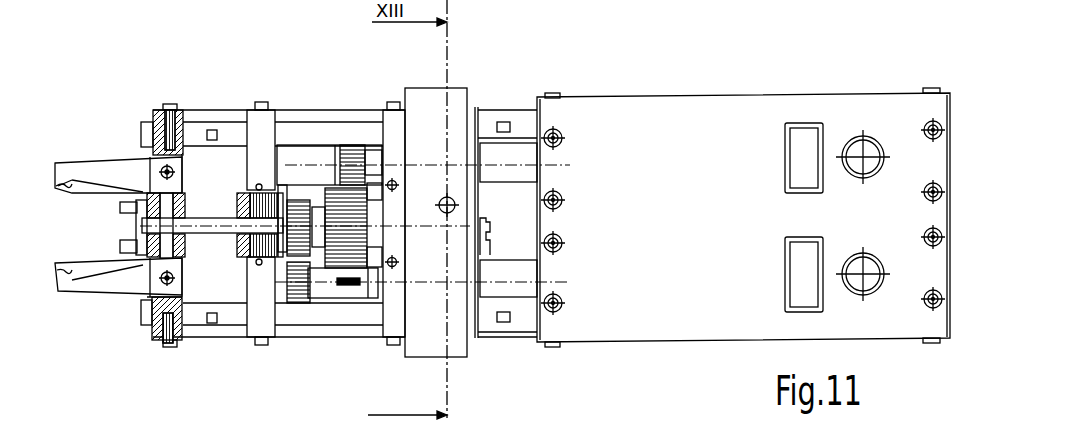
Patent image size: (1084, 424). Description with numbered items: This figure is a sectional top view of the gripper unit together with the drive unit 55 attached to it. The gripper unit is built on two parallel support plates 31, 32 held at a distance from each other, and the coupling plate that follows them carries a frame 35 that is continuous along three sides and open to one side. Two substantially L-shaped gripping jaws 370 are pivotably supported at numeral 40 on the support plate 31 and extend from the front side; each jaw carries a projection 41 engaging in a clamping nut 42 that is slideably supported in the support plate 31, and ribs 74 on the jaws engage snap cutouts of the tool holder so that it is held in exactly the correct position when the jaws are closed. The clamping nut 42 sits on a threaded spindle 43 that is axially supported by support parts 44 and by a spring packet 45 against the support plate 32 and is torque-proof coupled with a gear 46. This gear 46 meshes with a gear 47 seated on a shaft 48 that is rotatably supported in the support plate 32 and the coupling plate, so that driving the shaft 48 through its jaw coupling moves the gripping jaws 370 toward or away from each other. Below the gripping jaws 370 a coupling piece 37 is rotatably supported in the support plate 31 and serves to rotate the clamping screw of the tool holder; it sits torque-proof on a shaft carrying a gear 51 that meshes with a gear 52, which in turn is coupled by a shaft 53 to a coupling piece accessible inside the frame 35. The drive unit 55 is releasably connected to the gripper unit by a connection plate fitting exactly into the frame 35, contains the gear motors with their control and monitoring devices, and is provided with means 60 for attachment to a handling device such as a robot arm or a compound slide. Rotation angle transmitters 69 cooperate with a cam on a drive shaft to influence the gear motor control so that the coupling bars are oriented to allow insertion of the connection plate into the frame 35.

The support plate 31 is at (172, 108).
The support plate 32 is at (263, 318).
The frame 35 is at (432, 100).
The coupling piece 37 is at (120, 212).
The pivot 40 is at (167, 168).
The projection 41 is at (182, 200).
The clamping nut 42 is at (163, 283).
The threaded spindle 43 is at (210, 233).
The support parts 44 is at (280, 193).
The spring packet 45 is at (259, 184).
The gear 46 is at (302, 203).
The gear 47 is at (297, 295).
The shaft 48 is at (337, 291).
The gear 51 is at (355, 255).
The gear 52 is at (365, 167).
The shaft 53 is at (374, 155).
The drive unit 55 is at (848, 93).
The attachment means 60 is at (867, 280).
The rotation angle transmitters 69 is at (488, 240).
The ribs 74 is at (85, 190).
The gripping jaws 370 is at (103, 173).